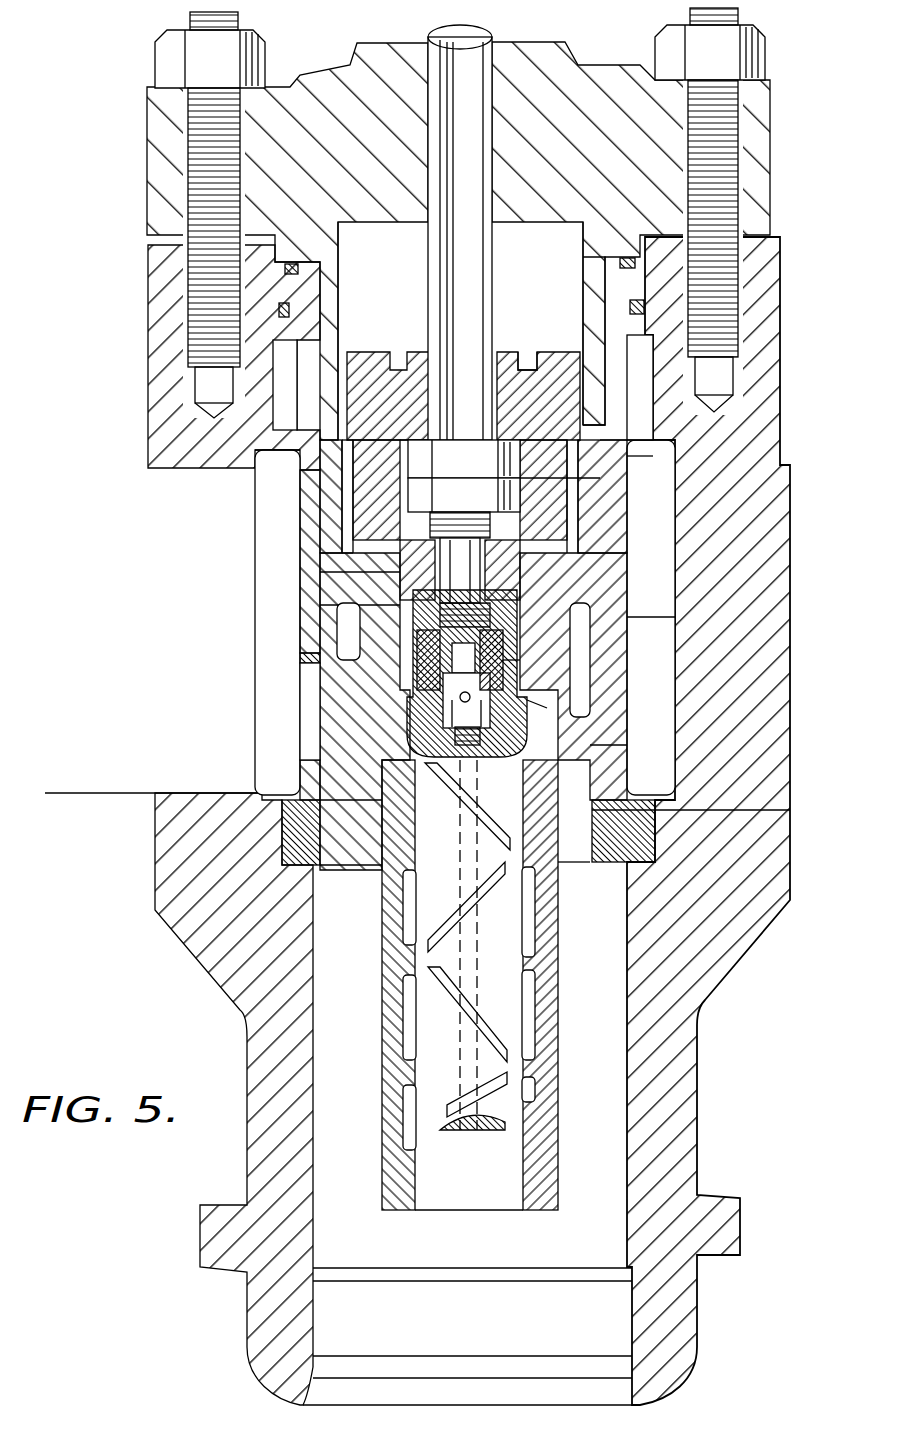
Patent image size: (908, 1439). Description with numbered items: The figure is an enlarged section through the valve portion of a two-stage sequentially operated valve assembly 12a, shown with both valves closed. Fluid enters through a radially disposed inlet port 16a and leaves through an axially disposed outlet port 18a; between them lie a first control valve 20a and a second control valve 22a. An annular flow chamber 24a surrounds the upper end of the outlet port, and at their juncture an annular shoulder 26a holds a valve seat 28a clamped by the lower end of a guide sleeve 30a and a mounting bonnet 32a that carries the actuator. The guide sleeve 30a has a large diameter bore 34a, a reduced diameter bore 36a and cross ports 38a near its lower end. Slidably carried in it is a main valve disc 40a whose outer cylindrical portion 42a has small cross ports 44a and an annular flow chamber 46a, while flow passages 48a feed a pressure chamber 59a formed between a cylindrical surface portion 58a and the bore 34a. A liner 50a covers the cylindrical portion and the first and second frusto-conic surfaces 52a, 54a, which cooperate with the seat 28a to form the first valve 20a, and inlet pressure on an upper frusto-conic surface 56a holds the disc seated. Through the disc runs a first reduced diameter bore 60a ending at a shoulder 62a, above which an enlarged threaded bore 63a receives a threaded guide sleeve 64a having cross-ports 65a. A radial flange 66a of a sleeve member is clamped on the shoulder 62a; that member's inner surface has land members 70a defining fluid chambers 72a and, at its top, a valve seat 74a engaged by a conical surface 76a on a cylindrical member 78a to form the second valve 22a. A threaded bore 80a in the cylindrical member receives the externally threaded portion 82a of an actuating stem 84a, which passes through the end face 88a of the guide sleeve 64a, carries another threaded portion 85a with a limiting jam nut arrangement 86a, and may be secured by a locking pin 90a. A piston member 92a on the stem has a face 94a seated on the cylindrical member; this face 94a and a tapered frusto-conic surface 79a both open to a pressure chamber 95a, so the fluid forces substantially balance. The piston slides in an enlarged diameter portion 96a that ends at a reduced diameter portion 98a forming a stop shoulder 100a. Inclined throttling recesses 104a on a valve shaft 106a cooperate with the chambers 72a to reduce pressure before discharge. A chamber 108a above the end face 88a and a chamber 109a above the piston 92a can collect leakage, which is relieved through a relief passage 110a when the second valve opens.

The valve assembly 12a is at (272, 680).
The inlet port 16a is at (116, 648).
The outlet port 18a is at (498, 1334).
The first control valve 20a is at (310, 768).
The second control valve 22a is at (620, 665).
The annular flow chamber 24a is at (272, 478).
The annular shoulder 26a is at (285, 857).
The valve seat 28a is at (268, 795).
The guide sleeve 30a is at (305, 490).
The mounting bonnet 32a is at (322, 78).
The large diameter bore 34a is at (330, 527).
The reduced diameter bore 36a is at (345, 292).
The cross ports 38a is at (300, 702).
The main valve disc 40a is at (335, 575).
The outer cylindrical portion 42a is at (335, 605).
The cross ports 44a is at (327, 667).
The annular flow chamber 46a is at (640, 578).
The flow passages 48a is at (290, 455).
The liner 50a is at (560, 862).
The first frusto-conic surface 52a is at (320, 865).
The second frusto-conic surface 54a is at (364, 822).
The frusto-conic surface 56a is at (590, 523).
The cylindrical surface portion 58a is at (560, 468).
The pressure chamber 59a is at (300, 437).
The first reduced diameter bore 60a is at (790, 810).
The shoulder 62a is at (600, 745).
The enlarged bore 63a is at (665, 472).
The guide sleeve 64a is at (585, 373).
The cross-ports 65a is at (640, 600).
The radial flange 66a is at (640, 718).
The land members 70a is at (548, 893).
The fluid chambers 72a is at (380, 883).
The valve seat 74a is at (320, 728).
The conical surface 76a is at (547, 707).
The cylindrical member 78a is at (500, 640).
The tapered frusto-conic surface 79a is at (425, 703).
The threaded bore 80a is at (443, 660).
The externally threaded portion 82a is at (440, 637).
The actuating stem 84a is at (497, 42).
The externally threaded portion 85a is at (560, 355).
The limiting jam nut arrangement 86a is at (503, 353).
The end face 88a is at (360, 352).
The locking pin 90a is at (470, 985).
The piston member 92a is at (548, 565).
The face 94a is at (520, 582).
The pressure chamber 95a is at (320, 657).
The enlarged diameter portion 96a is at (337, 517).
The reduced diameter portion 98a is at (640, 458).
The stop shoulder 100a is at (413, 407).
The inclined throttling recesses 104a is at (447, 773).
The valve shaft 106a is at (435, 1118).
The chamber 108a is at (418, 258).
The chamber 109a is at (372, 556).
The relief passage 110a is at (440, 366).